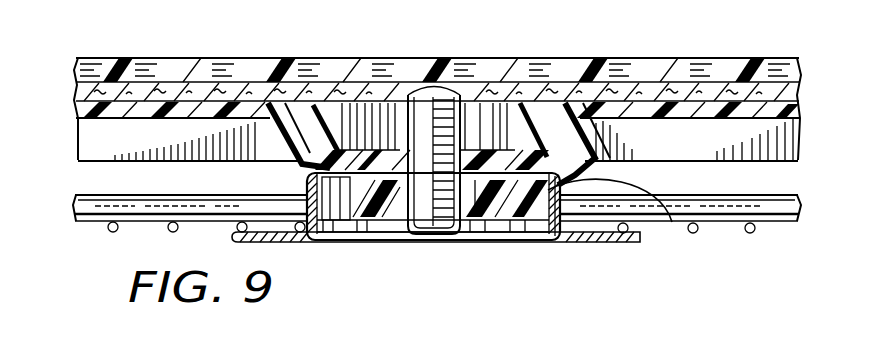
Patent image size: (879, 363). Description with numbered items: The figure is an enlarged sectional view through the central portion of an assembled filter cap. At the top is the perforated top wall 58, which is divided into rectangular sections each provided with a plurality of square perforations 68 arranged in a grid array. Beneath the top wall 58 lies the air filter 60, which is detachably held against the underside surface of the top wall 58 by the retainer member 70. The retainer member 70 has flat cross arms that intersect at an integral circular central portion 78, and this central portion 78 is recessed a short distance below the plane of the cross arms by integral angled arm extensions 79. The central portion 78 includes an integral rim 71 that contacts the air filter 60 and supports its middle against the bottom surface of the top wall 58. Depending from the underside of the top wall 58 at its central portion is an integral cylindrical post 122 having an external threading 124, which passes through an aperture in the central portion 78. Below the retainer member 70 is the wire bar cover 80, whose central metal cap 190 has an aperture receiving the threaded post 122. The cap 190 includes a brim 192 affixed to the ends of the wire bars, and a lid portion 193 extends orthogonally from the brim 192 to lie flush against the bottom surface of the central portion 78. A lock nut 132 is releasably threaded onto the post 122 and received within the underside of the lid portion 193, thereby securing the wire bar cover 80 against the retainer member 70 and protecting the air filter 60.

The perforated top wall 58 is at (630, 53).
The air filter 60 is at (373, 58).
The perforations 68 is at (200, 62).
The retainer member 70 is at (193, 119).
The integral rim 71 is at (520, 197).
The circular central portion 78 is at (274, 154).
The angled arm extensions 79 is at (580, 140).
The wire bar cover 80 is at (167, 228).
The cylindrical post 122 is at (447, 213).
The external threading 124 is at (507, 162).
The lock nut 132 is at (383, 208).
The cap 190 is at (616, 246).
The brim 192 is at (287, 242).
The lid portion 193 is at (672, 222).